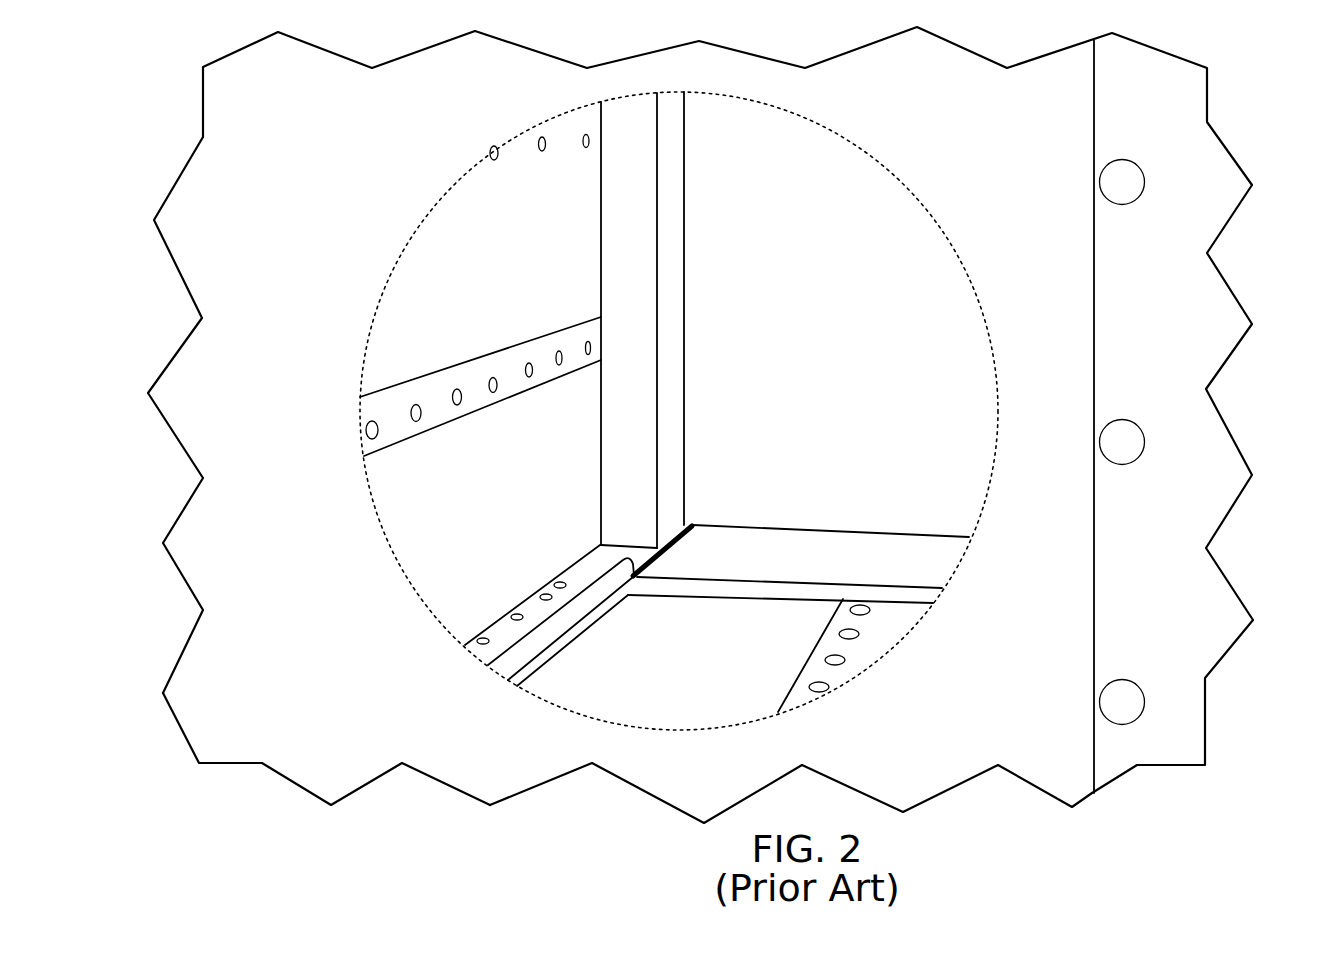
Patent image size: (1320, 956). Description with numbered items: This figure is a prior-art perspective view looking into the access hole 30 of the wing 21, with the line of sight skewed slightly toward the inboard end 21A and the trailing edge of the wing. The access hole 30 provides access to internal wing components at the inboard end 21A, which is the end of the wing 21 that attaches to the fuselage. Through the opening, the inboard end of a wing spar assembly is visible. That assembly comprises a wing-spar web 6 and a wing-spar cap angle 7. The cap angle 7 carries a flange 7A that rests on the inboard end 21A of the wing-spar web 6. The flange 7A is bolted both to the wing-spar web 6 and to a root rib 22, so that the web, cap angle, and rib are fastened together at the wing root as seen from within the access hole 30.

The wing-spar web 6 is at (667, 685).
The wing-spar cap angle 7 is at (437, 563).
The flange 7A is at (507, 630).
The wing 21 is at (252, 167).
The inboard end 21A is at (324, 747).
The root rib 22 is at (393, 340).
The access hole 30 is at (713, 142).